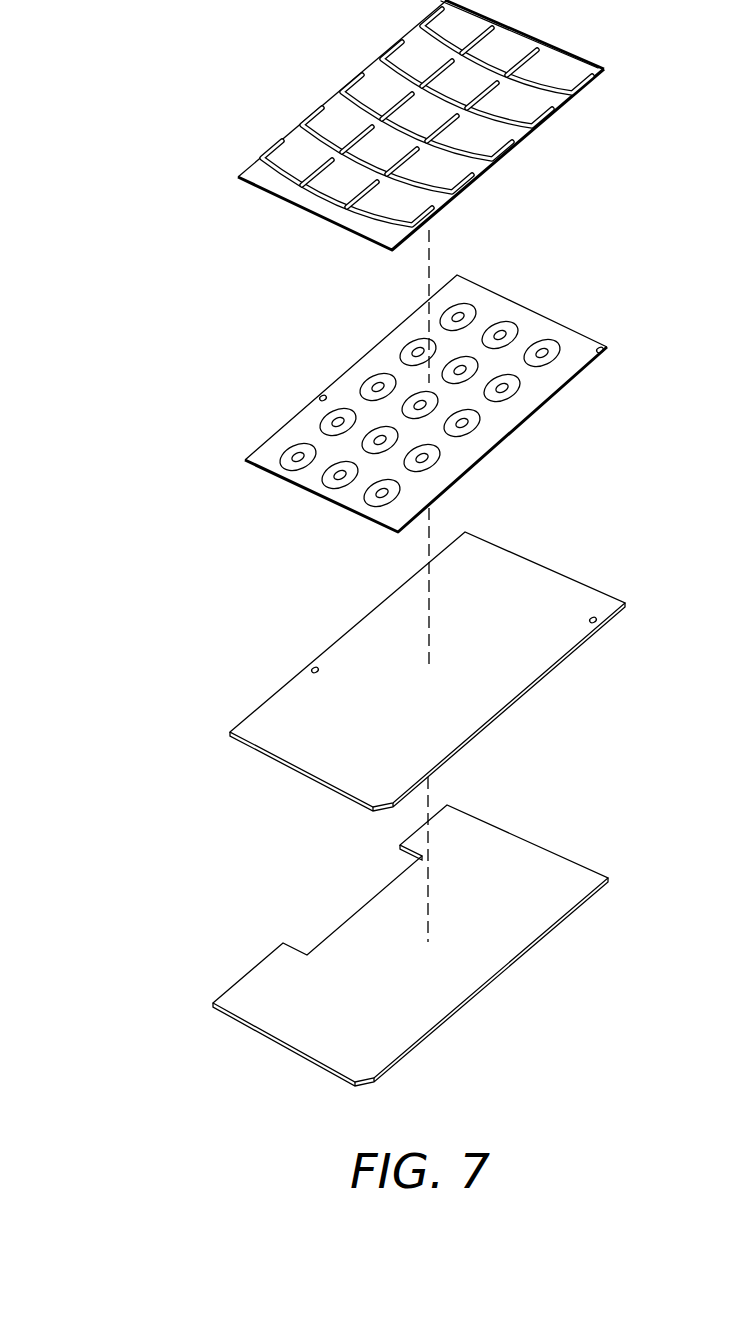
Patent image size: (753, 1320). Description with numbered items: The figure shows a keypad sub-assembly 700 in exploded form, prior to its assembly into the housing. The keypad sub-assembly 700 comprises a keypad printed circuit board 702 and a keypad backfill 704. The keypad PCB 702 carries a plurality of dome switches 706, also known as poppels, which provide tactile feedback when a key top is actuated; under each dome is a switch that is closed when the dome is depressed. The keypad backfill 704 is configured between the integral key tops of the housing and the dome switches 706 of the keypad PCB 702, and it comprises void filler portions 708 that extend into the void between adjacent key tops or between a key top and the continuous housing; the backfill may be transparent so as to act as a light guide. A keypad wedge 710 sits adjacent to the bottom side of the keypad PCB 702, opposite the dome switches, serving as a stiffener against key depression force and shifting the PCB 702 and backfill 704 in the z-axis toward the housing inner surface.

The keypad sub-assembly 700 is at (100, 603).
The keypad printed circuit board 702 is at (300, 778).
The keypad backfill 704 is at (318, 217).
The dome switch 706 is at (319, 496).
The void filler portion 708 is at (426, 11).
The keypad wedge 710 is at (282, 1050).